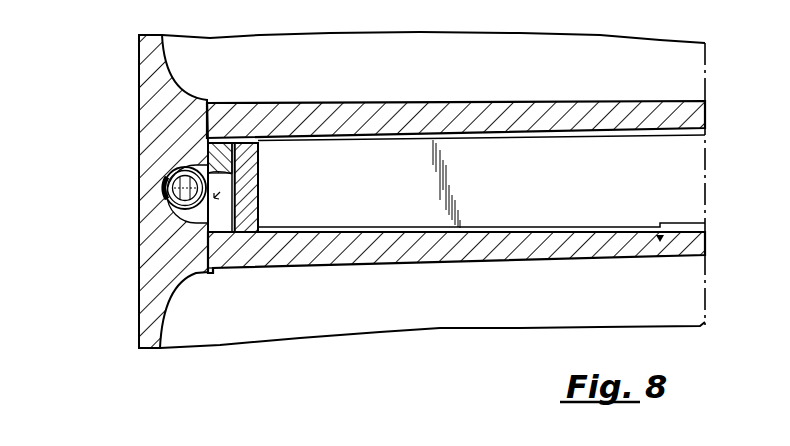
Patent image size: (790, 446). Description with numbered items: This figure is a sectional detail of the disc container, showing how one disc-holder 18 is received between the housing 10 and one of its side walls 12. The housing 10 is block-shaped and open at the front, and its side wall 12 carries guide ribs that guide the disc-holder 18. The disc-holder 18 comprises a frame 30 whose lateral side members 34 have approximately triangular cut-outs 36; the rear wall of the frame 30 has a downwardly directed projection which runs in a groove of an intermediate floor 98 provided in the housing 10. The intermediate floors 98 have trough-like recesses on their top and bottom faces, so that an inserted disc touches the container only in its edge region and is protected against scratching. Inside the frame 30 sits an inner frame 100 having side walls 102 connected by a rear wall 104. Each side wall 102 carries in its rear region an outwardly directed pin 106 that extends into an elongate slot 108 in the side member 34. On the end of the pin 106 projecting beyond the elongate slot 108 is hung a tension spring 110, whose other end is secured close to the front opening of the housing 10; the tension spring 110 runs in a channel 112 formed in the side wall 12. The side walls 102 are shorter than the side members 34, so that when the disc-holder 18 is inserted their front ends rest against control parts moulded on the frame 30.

The housing 10 is at (130, 69).
The side wall 12 is at (150, 314).
The disc-holder 18 is at (659, 238).
The frame 30 is at (276, 140).
The lateral side member 34 is at (194, 250).
The triangular cut-out 36 is at (258, 178).
The intermediate floor 98 is at (440, 117).
The inner frame 100 is at (260, 147).
The side wall of inner frame 102 is at (265, 270).
The rear wall of inner frame 104 is at (508, 206).
The pin 106 is at (165, 178).
The elongate slot 108 is at (258, 208).
The tension spring 110 is at (163, 210).
The channel 112 is at (200, 153).